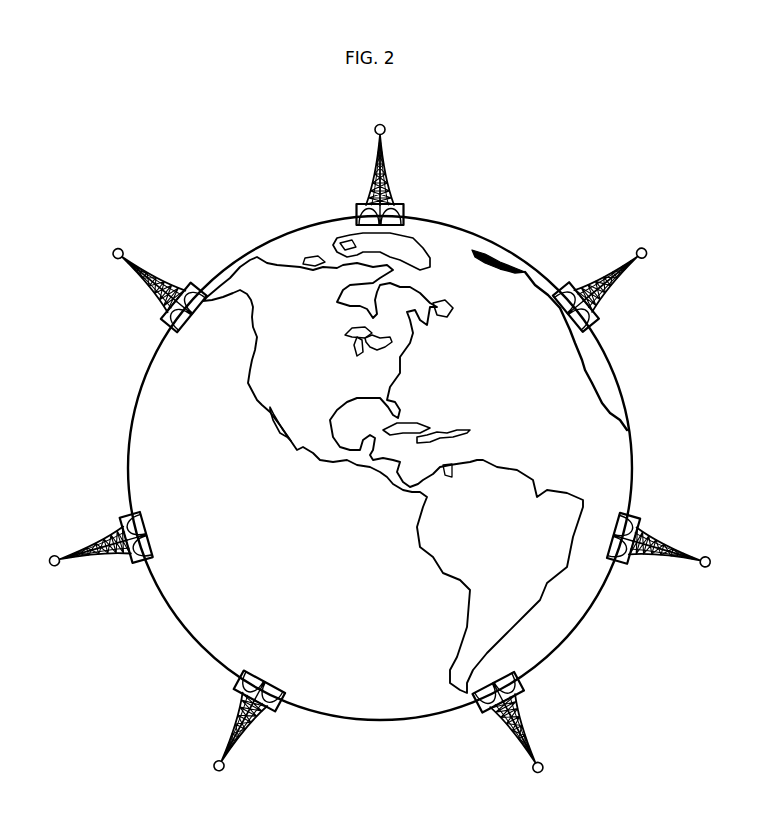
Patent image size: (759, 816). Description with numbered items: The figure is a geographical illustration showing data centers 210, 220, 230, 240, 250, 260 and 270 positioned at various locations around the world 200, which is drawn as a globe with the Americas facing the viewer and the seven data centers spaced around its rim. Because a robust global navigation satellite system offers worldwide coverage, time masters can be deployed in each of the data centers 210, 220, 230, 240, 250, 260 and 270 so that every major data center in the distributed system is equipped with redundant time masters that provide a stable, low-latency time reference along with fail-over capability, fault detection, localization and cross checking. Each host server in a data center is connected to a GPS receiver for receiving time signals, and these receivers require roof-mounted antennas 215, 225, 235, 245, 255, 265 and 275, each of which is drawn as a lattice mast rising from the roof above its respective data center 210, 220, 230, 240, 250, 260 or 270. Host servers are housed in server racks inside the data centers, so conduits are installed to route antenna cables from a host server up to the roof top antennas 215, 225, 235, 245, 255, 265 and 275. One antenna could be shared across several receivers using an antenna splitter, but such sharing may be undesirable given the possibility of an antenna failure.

The world 200 is at (492, 238).
The data center 210 is at (636, 517).
The roof-mounted antenna 215 is at (650, 562).
The data center 220 is at (492, 710).
The roof-mounted antenna 225 is at (530, 704).
The data center 230 is at (272, 712).
The roof-mounted antenna 235 is at (240, 700).
The data center 240 is at (125, 520).
The roof-mounted antenna 245 is at (110, 561).
The data center 250 is at (158, 322).
The roof-mounted antenna 255 is at (160, 268).
The data center 260 is at (403, 216).
The roof-mounted antenna 265 is at (370, 160).
The data center 270 is at (598, 312).
The roof-mounted antenna 275 is at (606, 268).